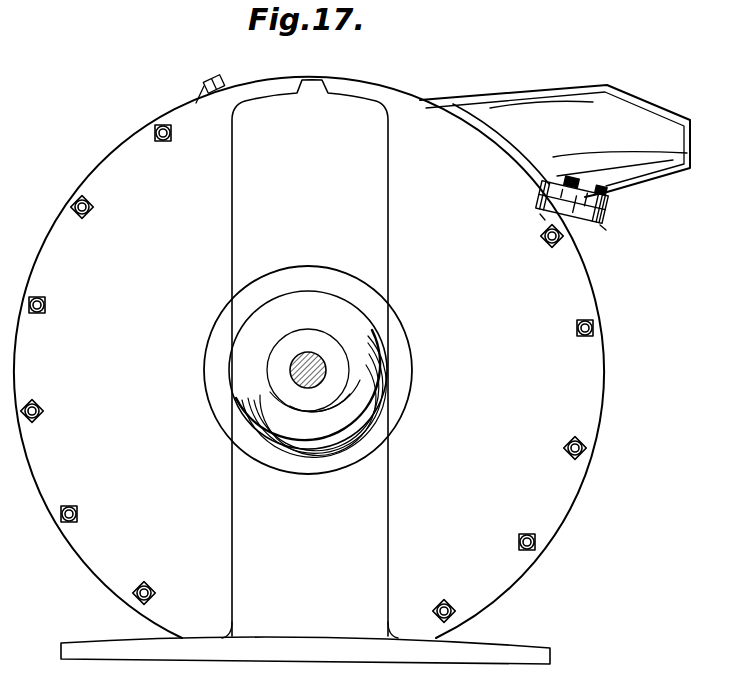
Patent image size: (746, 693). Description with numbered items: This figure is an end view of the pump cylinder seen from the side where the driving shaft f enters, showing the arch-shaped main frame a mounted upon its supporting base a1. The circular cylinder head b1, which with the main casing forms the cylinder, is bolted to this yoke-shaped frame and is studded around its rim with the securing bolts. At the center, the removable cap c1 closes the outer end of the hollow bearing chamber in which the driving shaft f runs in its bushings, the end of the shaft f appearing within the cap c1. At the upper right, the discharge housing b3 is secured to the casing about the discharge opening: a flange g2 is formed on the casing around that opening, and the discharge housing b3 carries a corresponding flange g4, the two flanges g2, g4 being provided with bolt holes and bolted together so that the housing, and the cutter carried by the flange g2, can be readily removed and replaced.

The arch-shaped frame a is at (310, 359).
The supporting base a1 is at (505, 655).
The cylinder head b1 is at (309, 356).
The discharge housing b3 is at (555, 141).
The removable cap c1 is at (352, 328).
The driving shaft f is at (297, 373).
The flange g2 is at (606, 228).
The flange g4 is at (612, 208).